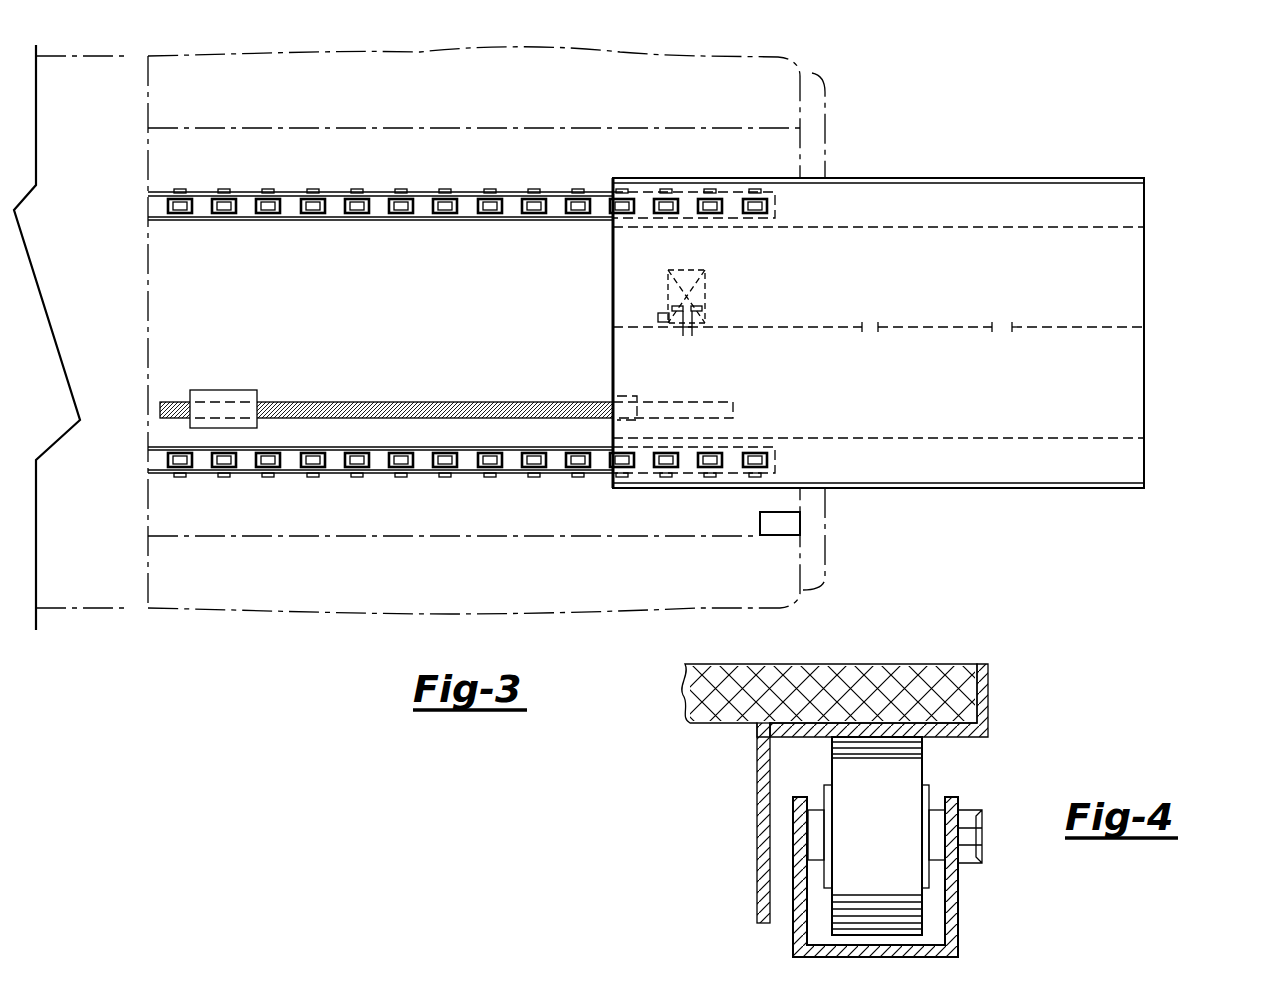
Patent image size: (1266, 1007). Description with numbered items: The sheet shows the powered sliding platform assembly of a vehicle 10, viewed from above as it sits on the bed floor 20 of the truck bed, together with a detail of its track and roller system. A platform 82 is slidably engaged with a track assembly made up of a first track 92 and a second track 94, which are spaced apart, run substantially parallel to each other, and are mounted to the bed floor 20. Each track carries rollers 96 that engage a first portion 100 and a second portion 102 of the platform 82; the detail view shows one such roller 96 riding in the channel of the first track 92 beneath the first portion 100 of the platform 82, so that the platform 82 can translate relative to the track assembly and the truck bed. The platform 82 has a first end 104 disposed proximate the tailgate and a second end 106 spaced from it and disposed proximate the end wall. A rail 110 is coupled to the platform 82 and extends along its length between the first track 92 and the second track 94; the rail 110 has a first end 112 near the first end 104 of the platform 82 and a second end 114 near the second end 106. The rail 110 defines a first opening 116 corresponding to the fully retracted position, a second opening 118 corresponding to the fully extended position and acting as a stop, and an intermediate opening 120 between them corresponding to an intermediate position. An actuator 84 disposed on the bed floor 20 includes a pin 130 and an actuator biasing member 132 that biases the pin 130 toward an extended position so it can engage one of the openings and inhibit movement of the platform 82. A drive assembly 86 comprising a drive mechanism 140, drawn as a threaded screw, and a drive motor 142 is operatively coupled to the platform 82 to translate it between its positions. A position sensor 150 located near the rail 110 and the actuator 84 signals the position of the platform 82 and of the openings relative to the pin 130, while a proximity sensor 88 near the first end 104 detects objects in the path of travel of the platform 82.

In FIG. 3, the vehicle 10 is at (213, 640).
In FIG. 3, the bed floor 20 is at (380, 303).
In FIG. 3, the platform 82 is at (1113, 240).
In FIG. 4, the platform 82 is at (785, 670).
In FIG. 3, the actuator 84 is at (667, 284).
In FIG. 3, the drive assembly 86 is at (217, 388).
In FIG. 3, the proximity sensor 88 is at (785, 522).
In FIG. 3, the first track 92 is at (378, 190).
In FIG. 4, the first track 92 is at (966, 918).
In FIG. 3, the second track 94 is at (333, 473).
In FIG. 3, the rollers 96 is at (193, 205).
In FIG. 4, the rollers 96 is at (892, 840).
In FIG. 3, the first portion 100 is at (974, 207).
In FIG. 4, the first portion 100 is at (900, 652).
In FIG. 3, the second portion 102 is at (959, 452).
In FIG. 3, the first end 104 is at (1147, 420).
In FIG. 3, the second end 106 is at (612, 375).
In FIG. 3, the rail 110 is at (937, 338).
In FIG. 3, the first end 112 is at (1130, 327).
In FIG. 3, the second end 114 is at (627, 330).
In FIG. 3, the first opening 116 is at (1007, 338).
In FIG. 3, the second opening 118 is at (683, 336).
In FIG. 3, the intermediate opening 120 is at (878, 326).
In FIG. 3, the pin 130 is at (688, 335).
In FIG. 3, the actuator biasing member 132 is at (688, 290).
In FIG. 3, the drive mechanism 140 is at (430, 402).
In FIG. 3, the drive motor 142 is at (247, 390).
In FIG. 3, the position sensor 150 is at (660, 317).